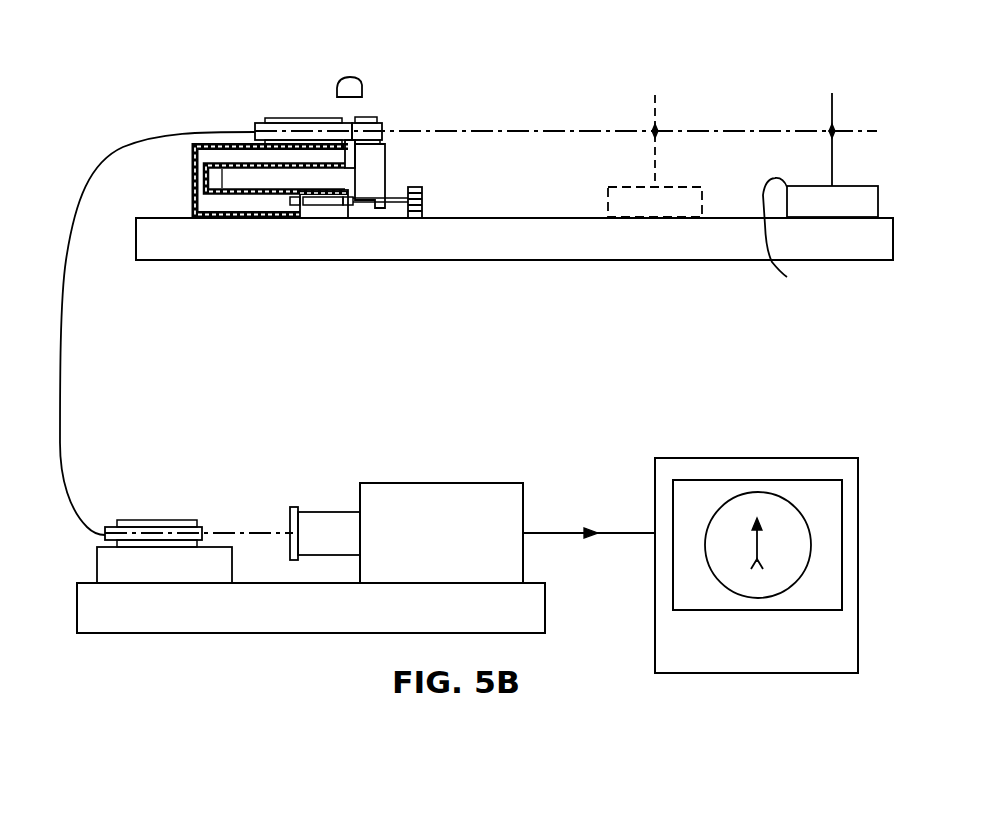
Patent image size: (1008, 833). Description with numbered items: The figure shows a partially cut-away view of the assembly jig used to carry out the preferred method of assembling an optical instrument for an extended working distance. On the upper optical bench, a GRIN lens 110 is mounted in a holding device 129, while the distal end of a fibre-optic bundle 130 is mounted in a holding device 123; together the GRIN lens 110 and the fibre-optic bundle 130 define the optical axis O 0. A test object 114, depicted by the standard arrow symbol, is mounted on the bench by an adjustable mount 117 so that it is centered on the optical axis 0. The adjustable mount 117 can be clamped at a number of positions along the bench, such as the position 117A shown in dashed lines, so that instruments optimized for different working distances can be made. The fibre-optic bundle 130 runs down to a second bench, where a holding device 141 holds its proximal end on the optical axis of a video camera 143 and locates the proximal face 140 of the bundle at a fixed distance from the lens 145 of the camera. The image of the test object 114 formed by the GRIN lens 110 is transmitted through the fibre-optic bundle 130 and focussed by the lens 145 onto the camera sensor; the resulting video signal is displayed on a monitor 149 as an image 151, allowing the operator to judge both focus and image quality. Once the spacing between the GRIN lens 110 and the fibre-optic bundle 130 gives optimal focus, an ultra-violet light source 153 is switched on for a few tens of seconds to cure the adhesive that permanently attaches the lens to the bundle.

The optical axis 0 is at (580, 130).
The GRIN lens 110 is at (387, 123).
The test object 114 is at (828, 128).
The adjustable mount 117 is at (795, 240).
The position 117A is at (700, 188).
The holding device 123 is at (304, 103).
The holding device 129 is at (378, 99).
The fibre-optic bundle 130 is at (253, 127).
The proximal face 140 is at (200, 528).
The holding device 141 is at (151, 506).
The video camera 143 is at (460, 535).
The lens 145 is at (313, 510).
The monitor 149 is at (737, 457).
The image 151 is at (768, 518).
The ultra-violet light source 153 is at (360, 77).